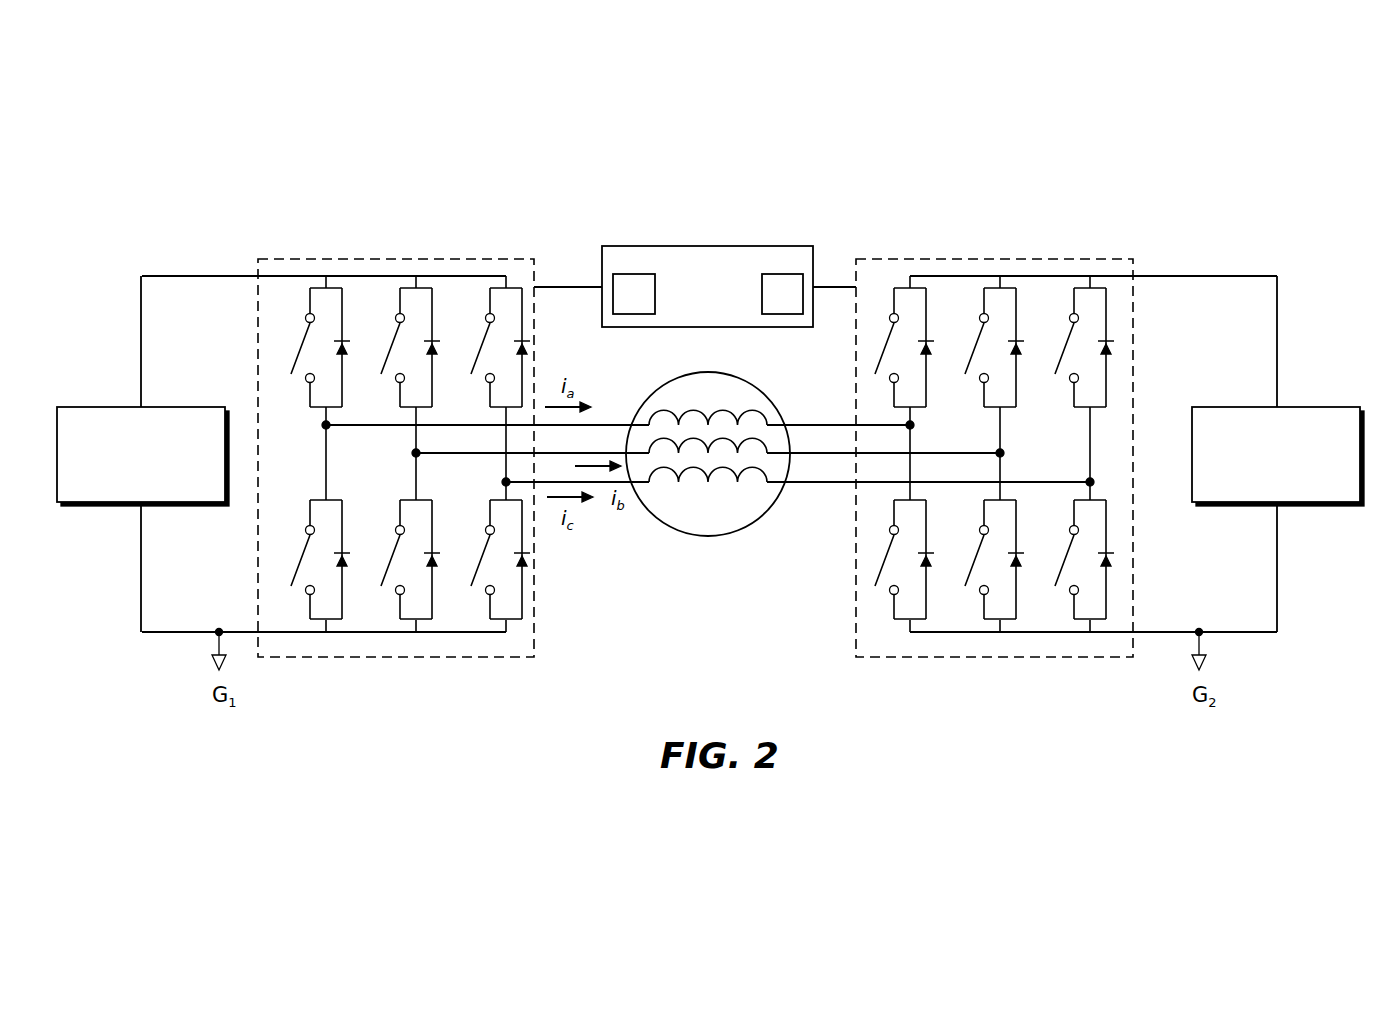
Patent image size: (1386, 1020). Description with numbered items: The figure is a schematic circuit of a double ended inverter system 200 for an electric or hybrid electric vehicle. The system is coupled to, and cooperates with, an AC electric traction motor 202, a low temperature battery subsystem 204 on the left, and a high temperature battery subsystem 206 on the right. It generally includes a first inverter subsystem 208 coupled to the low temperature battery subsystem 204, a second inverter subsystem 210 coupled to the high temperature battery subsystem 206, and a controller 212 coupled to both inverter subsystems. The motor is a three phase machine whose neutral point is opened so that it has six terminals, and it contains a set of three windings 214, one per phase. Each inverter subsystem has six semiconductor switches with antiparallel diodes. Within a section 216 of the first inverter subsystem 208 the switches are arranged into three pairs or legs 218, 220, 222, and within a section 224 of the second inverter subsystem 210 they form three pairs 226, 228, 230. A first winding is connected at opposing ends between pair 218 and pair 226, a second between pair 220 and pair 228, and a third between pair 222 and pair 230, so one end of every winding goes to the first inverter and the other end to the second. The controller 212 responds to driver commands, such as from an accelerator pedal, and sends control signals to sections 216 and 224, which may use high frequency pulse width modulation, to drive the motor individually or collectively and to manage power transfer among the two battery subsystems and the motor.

The double ended inverter system 200 is at (1291, 136).
The AC electric traction motor 202 is at (706, 467).
The low temperature battery subsystem 204 is at (72, 407).
The high temperature battery subsystem 206 is at (1345, 407).
The first inverter subsystem 208 is at (413, 437).
The second inverter subsystem 210 is at (994, 438).
The controller 212 is at (655, 246).
The set of windings 214 is at (725, 492).
The section of first inverter subsystem 216 is at (296, 259).
The switch pair 218 is at (328, 644).
The switch pair 220 is at (417, 644).
The switch pair 222 is at (507, 644).
The section of second inverter subsystem 224 is at (1112, 259).
The switch pair 226 is at (911, 644).
The switch pair 228 is at (1001, 644).
The switch pair 230 is at (1091, 644).